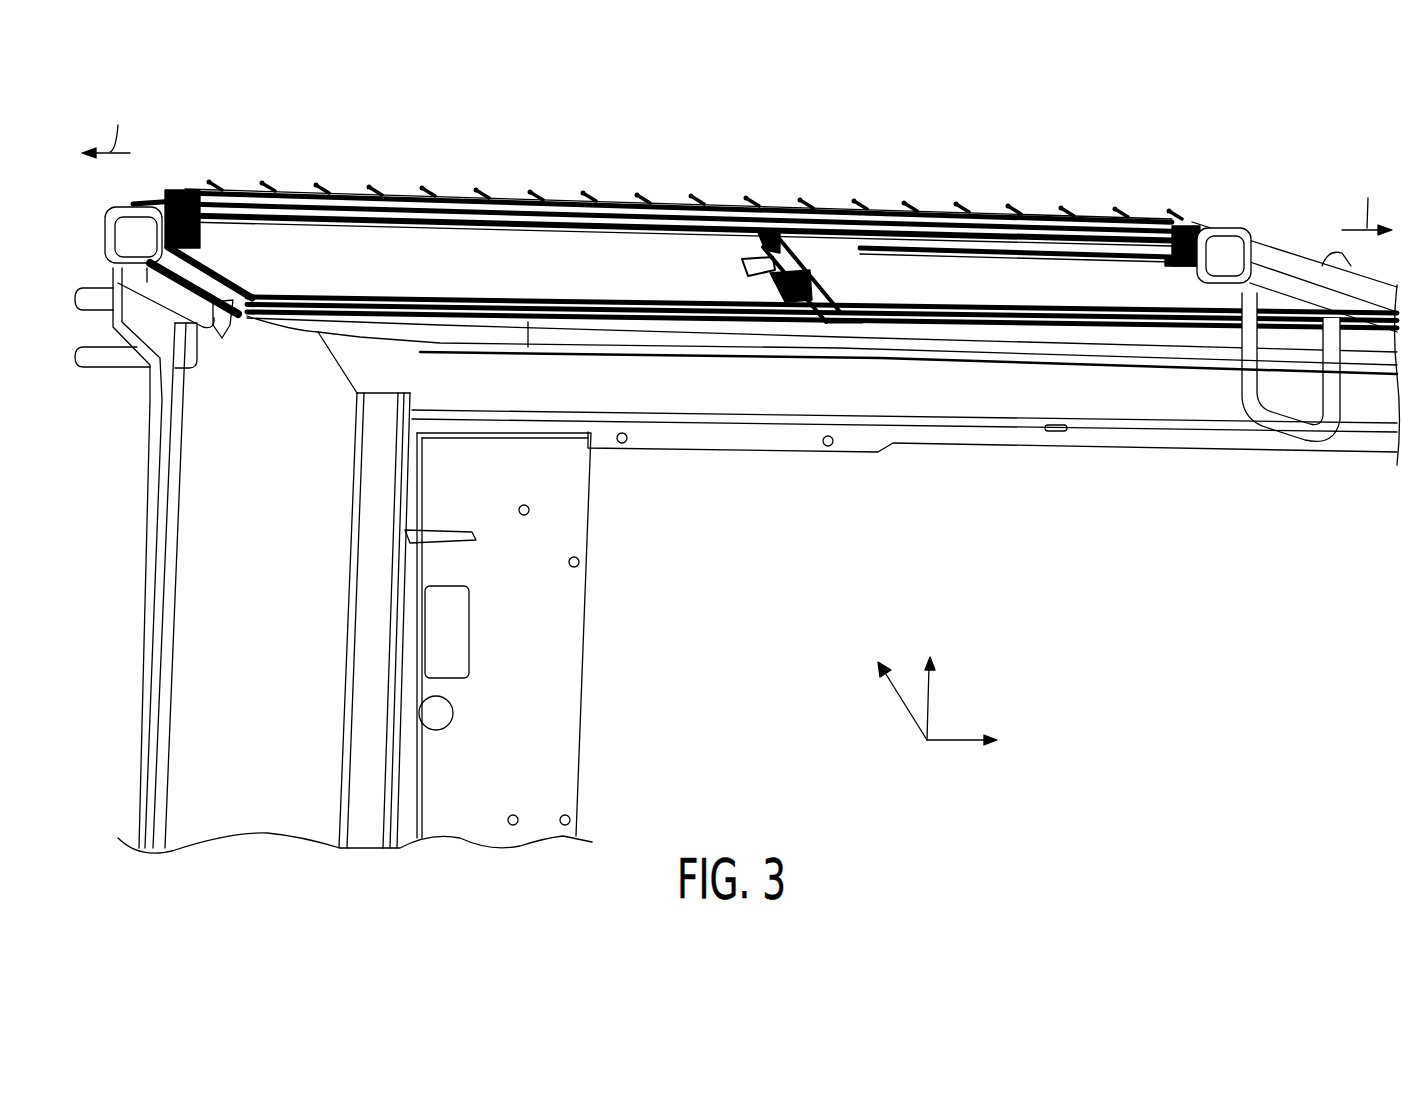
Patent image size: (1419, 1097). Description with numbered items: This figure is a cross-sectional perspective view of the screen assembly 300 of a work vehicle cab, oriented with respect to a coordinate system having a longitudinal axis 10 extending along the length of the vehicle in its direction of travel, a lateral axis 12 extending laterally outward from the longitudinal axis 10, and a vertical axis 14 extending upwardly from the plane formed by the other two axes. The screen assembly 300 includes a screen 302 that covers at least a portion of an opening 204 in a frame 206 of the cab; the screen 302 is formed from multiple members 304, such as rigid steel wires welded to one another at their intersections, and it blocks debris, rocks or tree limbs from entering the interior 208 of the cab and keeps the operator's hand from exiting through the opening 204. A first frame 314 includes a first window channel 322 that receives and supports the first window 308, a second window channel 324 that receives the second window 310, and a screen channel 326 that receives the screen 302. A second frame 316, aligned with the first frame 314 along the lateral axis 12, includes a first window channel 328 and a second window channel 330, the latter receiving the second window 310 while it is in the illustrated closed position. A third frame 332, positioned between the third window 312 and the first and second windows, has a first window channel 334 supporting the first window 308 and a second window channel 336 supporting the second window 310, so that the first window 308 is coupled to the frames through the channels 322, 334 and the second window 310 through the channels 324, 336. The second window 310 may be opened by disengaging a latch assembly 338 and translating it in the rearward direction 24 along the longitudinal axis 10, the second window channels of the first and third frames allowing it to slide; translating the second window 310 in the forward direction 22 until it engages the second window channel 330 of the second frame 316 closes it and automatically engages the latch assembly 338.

The longitudinal axis 10 is at (955, 742).
The lateral axis 12 is at (930, 703).
The vertical axis 14 is at (905, 708).
The forward direction 22 is at (1367, 201).
The rearward direction 24 is at (106, 127).
The opening 204 is at (346, 173).
The frame 206 is at (1272, 264).
The interior 208 is at (1036, 530).
The screen assembly 300 is at (681, 172).
The screen 302 is at (775, 232).
The member 304 is at (468, 197).
The first window 308 is at (422, 270).
The second window 310 is at (1018, 281).
The third window 312 is at (1025, 341).
The first frame 314 is at (227, 302).
The second frame 316 is at (1188, 272).
The first window channel 322 is at (164, 200).
The second window channel 324 is at (160, 238).
The screen channel 326 is at (182, 198).
The first window channel 328 is at (1176, 228).
The second window channel 330 is at (1155, 266).
The third frame 332 is at (757, 324).
The first window channel 334 is at (627, 297).
The second window channel 336 is at (642, 325).
The latch assembly 338 is at (798, 302).